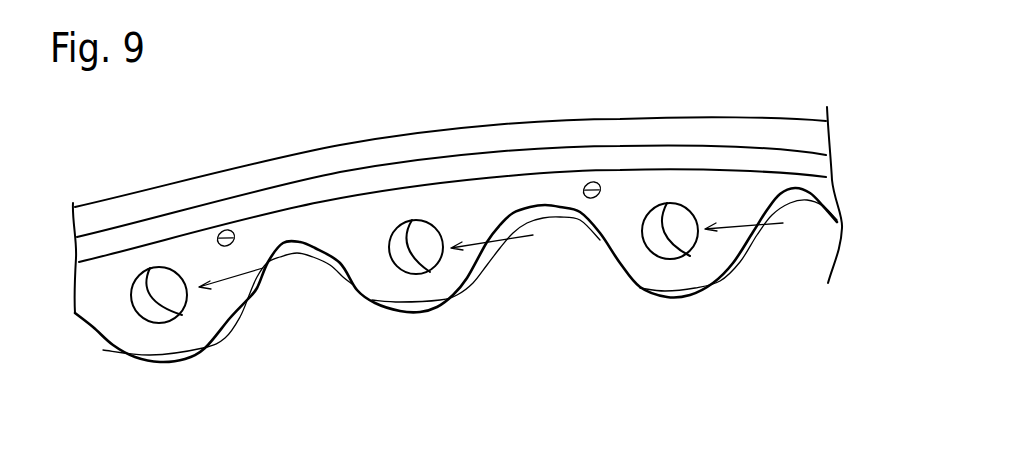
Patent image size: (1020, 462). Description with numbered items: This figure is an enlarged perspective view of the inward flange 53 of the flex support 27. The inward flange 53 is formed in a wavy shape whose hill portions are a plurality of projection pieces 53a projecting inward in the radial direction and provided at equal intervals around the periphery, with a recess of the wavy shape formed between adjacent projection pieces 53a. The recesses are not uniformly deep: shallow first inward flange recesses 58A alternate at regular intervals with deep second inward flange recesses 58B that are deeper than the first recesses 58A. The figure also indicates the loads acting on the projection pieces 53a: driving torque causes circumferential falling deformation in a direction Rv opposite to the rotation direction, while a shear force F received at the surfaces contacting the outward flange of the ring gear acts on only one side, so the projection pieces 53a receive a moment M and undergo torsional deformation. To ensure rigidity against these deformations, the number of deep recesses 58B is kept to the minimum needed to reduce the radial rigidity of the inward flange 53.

The inward flange 53 is at (457, 194).
The flex support 27 is at (377, 140).
The projection piece 53a is at (167, 365).
The first inward flange recess 58A is at (275, 250).
The second inward flange recess 58B is at (776, 202).
The shear force F is at (228, 338).
The moment M is at (83, 337).
The direction opposite to the rotation direction Rv is at (189, 384).